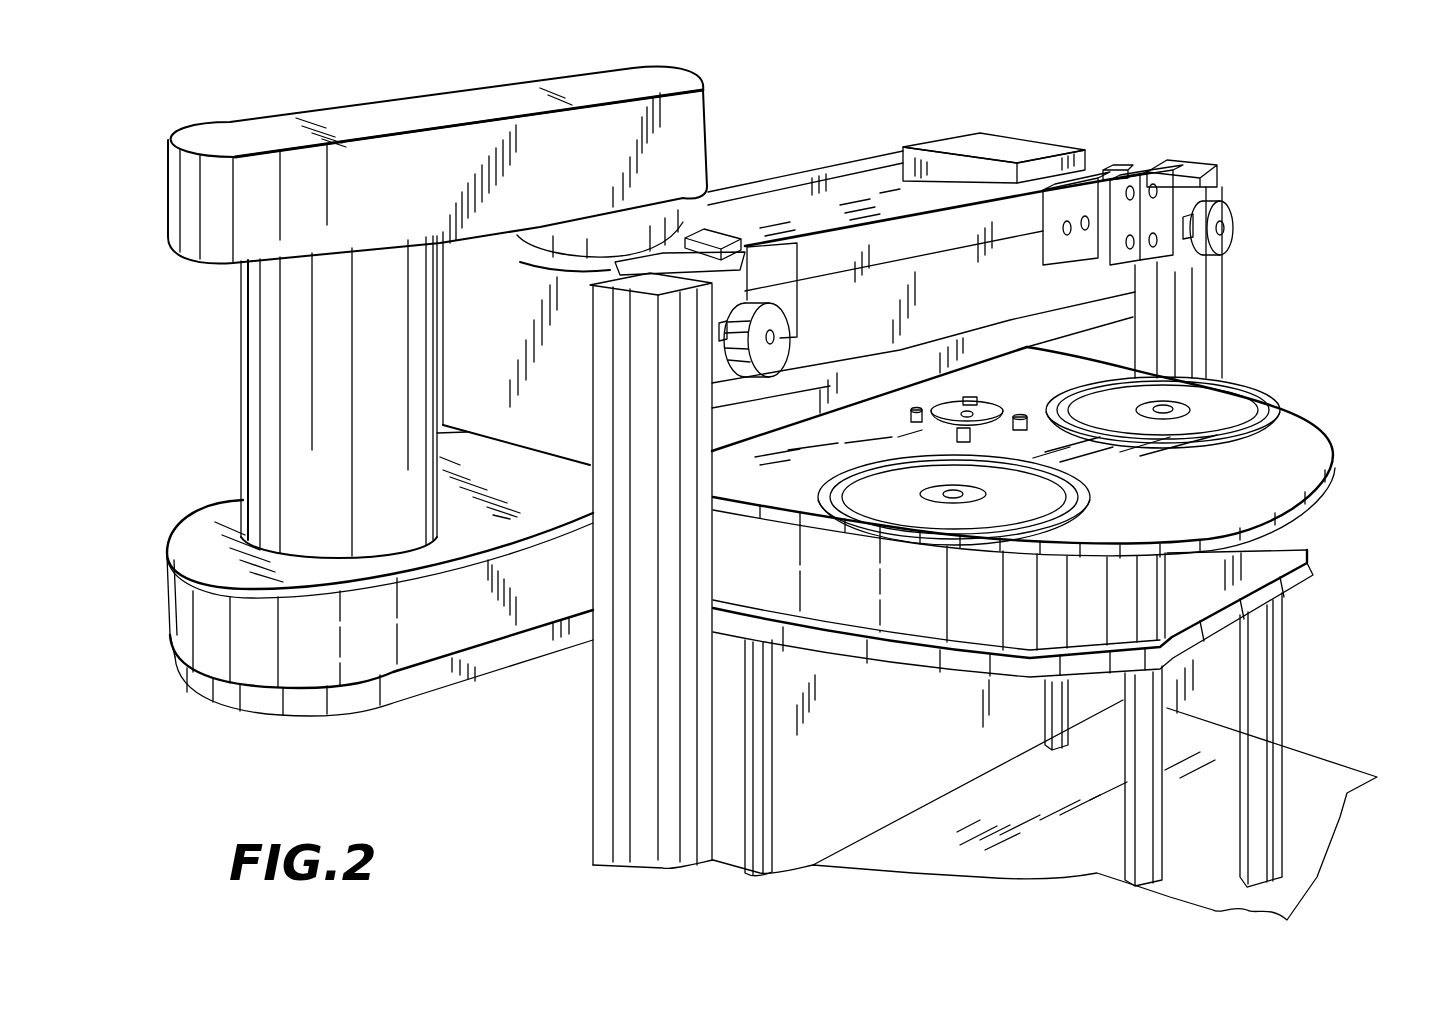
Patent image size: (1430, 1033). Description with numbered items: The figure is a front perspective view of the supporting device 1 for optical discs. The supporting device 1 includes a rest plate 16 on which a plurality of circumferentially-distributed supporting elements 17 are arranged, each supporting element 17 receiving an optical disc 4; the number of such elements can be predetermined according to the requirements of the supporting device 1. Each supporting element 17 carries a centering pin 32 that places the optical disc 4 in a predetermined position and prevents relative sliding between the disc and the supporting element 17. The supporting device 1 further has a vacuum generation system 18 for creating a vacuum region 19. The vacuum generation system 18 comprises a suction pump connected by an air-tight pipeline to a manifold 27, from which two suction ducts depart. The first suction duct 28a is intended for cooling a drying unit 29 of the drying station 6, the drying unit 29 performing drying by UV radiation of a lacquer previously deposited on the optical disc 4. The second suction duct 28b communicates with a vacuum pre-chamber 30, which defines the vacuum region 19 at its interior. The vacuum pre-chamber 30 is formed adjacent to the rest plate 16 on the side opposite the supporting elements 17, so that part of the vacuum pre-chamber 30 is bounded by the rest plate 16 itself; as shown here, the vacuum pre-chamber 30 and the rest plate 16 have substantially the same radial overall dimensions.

The supporting device 1 is at (1327, 330).
The optical disc 4 is at (867, 492).
The drying station 6 is at (903, 107).
The rest plate 16 is at (1312, 463).
The supporting element 17 is at (1103, 487).
The vacuum generation system 18 is at (290, 73).
The vacuum region 19 is at (962, 613).
The manifold 27 is at (397, 160).
The first suction duct 28a is at (655, 220).
The second suction duct 28b is at (252, 452).
The drying unit 29 is at (973, 263).
The vacuum pre-chamber 30 is at (1010, 627).
The centering pin 32 is at (947, 500).